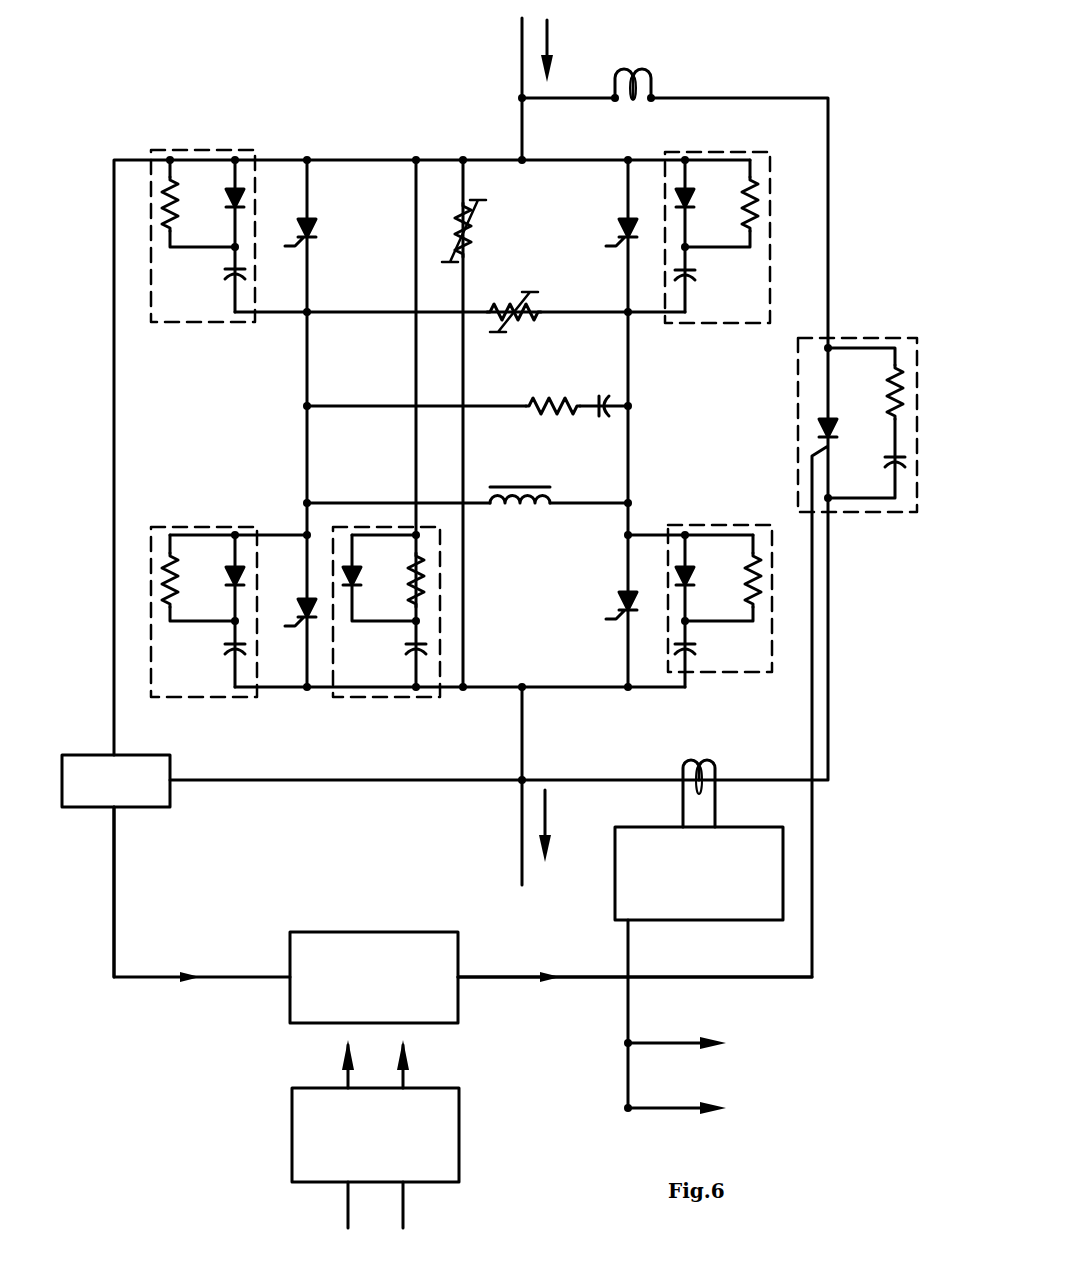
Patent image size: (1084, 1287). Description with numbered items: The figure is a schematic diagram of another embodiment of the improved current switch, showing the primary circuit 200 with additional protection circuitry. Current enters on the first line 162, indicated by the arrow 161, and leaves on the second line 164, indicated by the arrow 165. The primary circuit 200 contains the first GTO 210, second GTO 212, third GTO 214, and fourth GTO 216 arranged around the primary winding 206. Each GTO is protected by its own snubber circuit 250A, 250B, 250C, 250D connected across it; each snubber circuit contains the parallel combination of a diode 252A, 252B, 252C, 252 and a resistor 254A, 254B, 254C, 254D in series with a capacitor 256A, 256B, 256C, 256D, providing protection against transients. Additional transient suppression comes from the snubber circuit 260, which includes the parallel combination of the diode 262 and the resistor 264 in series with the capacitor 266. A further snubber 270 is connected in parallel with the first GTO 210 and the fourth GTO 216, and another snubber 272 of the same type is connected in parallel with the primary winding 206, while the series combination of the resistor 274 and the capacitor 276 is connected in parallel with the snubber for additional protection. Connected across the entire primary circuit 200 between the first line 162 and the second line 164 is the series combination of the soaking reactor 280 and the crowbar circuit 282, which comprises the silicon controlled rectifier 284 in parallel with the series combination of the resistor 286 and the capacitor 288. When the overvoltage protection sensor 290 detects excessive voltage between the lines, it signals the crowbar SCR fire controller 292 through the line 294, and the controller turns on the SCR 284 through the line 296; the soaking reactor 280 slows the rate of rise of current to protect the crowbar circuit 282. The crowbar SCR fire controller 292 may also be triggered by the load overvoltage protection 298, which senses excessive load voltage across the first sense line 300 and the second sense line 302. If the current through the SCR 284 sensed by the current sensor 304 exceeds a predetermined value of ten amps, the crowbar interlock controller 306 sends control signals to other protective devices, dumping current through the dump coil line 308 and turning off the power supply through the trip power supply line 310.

The primary circuit 200 is at (386, 100).
The current flow arrow 161 is at (548, 34).
The first line 162 is at (519, 44).
The second line 164 is at (522, 865).
The current flow arrow 165 is at (546, 812).
The primary winding 206 is at (512, 486).
The first GTO 210 is at (625, 229).
The second GTO 212 is at (305, 605).
The third GTO 214 is at (310, 226).
The fourth GTO 216 is at (625, 600).
The snubber circuit 250A is at (758, 148).
The snubber circuit 250B is at (200, 525).
The snubber circuit 250C is at (218, 148).
The snubber circuit 250D is at (711, 525).
The diode 252 is at (690, 572).
The diode 252A is at (690, 196).
The diode 252B is at (233, 573).
The diode 252C is at (236, 190).
The resistor 254A is at (752, 237).
The resistor 254B is at (165, 557).
The resistor 254C is at (170, 232).
The resistor 254D is at (755, 620).
The capacitor 256A is at (689, 281).
The capacitor 256B is at (232, 645).
The capacitor 256C is at (228, 277).
The capacitor 256D is at (690, 651).
The snubber circuit 260 is at (396, 525).
The diode 262 is at (353, 570).
The resistor 264 is at (414, 600).
The capacitor 266 is at (410, 647).
The snubber 270 is at (468, 224).
The snubber 272 is at (515, 298).
The resistor 274 is at (570, 404).
The capacitor 276 is at (602, 416).
The soaking reactor 280 is at (650, 78).
The crowbar circuit 282 is at (795, 400).
The silicon controlled rectifier 284 is at (833, 424).
The resistor 286 is at (896, 362).
The capacitor 288 is at (888, 458).
The overvoltage protection sensor 290 is at (152, 807).
The crowbar SCR fire controller 292 is at (325, 930).
The line 294 is at (118, 903).
The line 296 is at (585, 1000).
The load overvoltage protection 298 is at (292, 1140).
The first sense line 300 is at (345, 1215).
The second sense line 302 is at (405, 1215).
The current sensor 304 is at (716, 768).
The crowbar interlock controller 306 is at (735, 920).
The dump coil line 308 is at (652, 1040).
The trip power supply line 310 is at (652, 1104).